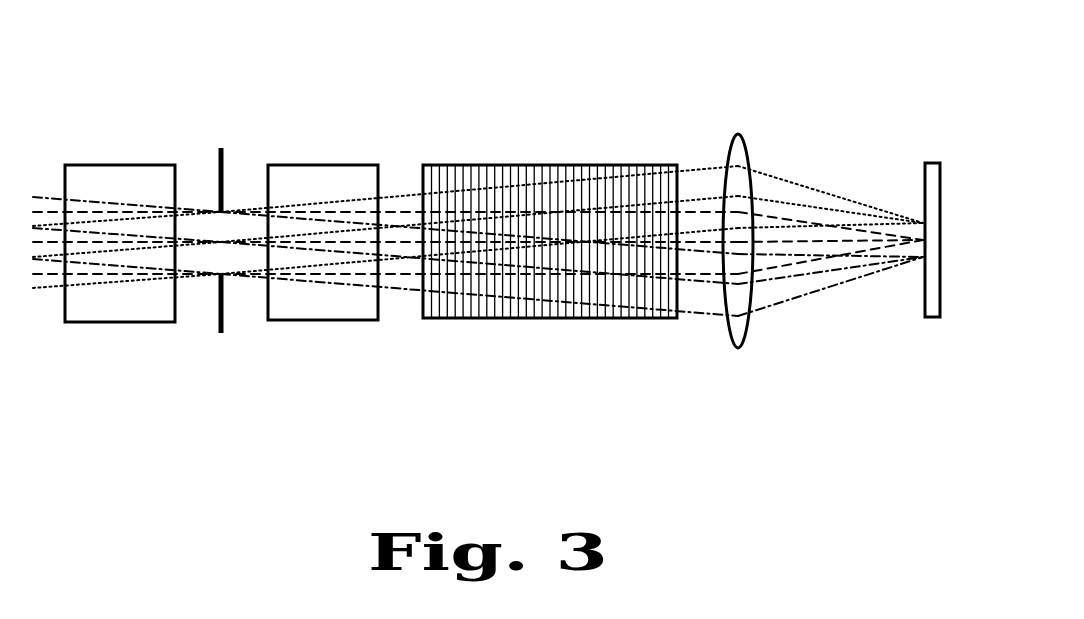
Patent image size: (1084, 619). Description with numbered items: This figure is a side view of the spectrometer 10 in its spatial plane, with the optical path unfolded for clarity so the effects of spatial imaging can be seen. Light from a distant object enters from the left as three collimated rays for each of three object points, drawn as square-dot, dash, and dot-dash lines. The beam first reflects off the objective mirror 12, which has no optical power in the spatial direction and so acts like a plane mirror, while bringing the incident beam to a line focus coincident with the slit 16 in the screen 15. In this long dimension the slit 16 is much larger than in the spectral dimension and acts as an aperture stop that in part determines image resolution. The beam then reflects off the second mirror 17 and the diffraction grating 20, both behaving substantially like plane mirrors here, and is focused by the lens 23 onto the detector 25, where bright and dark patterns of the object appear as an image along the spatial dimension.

The spectrometer 10 is at (121, 77).
The objective mirror 12 is at (122, 163).
The screen 15 is at (225, 148).
The slit 16 is at (221, 258).
The second mirror 17 is at (323, 163).
The diffraction grating 20 is at (595, 163).
The lens 23 is at (739, 132).
The detector 25 is at (923, 162).